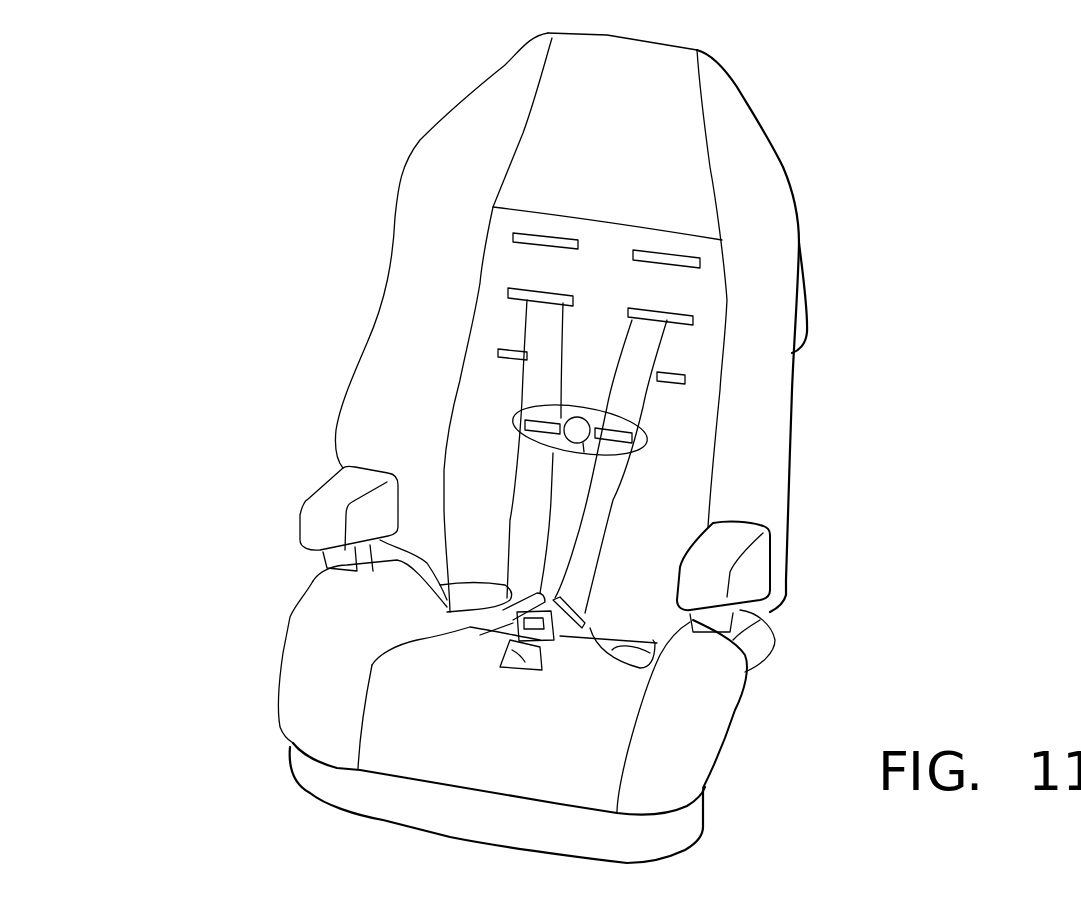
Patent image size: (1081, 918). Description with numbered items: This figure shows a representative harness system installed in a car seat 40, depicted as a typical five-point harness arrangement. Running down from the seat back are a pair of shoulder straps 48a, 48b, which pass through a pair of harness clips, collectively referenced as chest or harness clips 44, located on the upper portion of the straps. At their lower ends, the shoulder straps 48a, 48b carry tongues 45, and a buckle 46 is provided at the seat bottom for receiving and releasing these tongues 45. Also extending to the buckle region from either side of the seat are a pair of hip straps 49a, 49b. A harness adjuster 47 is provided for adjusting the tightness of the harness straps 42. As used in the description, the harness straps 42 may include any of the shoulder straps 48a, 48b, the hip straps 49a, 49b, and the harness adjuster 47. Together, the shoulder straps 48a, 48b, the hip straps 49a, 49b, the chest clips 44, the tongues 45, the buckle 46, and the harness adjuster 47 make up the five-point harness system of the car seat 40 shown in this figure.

The car seat 40 is at (827, 110).
The harness straps 42 is at (513, 392).
The chest or harness clips 44 is at (613, 430).
The tongues 45 is at (470, 583).
The buckle 46 is at (590, 618).
The harness adjuster 47 is at (470, 621).
The shoulder strap 48a is at (600, 517).
The shoulder strap 48b is at (533, 462).
The hip strap 49a is at (650, 660).
The hip strap 49b is at (513, 610).